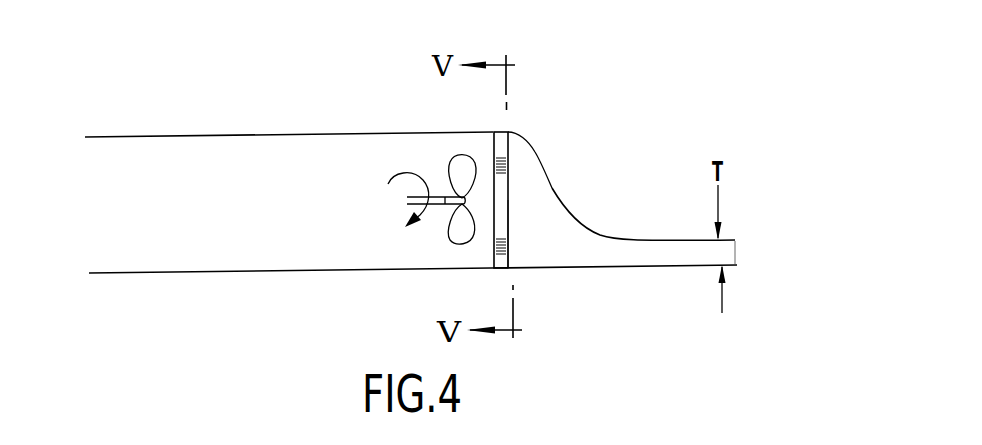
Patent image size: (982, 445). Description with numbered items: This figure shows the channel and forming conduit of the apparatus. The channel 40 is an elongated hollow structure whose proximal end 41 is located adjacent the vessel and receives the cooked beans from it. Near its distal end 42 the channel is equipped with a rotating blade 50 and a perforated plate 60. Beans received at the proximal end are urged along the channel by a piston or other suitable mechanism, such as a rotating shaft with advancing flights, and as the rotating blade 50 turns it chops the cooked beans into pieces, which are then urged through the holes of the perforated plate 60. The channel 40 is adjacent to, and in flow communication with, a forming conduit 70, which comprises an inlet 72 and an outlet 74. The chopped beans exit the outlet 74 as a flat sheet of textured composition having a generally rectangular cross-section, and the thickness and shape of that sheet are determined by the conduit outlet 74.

The channel 40 is at (210, 270).
The proximal end 41 is at (88, 159).
The distal end 42 is at (498, 130).
The rotating blade 50 is at (455, 240).
The perforated plate 60 is at (512, 160).
The forming conduit 70 is at (621, 202).
The inlet 72 is at (512, 223).
The outlet 74 is at (738, 253).